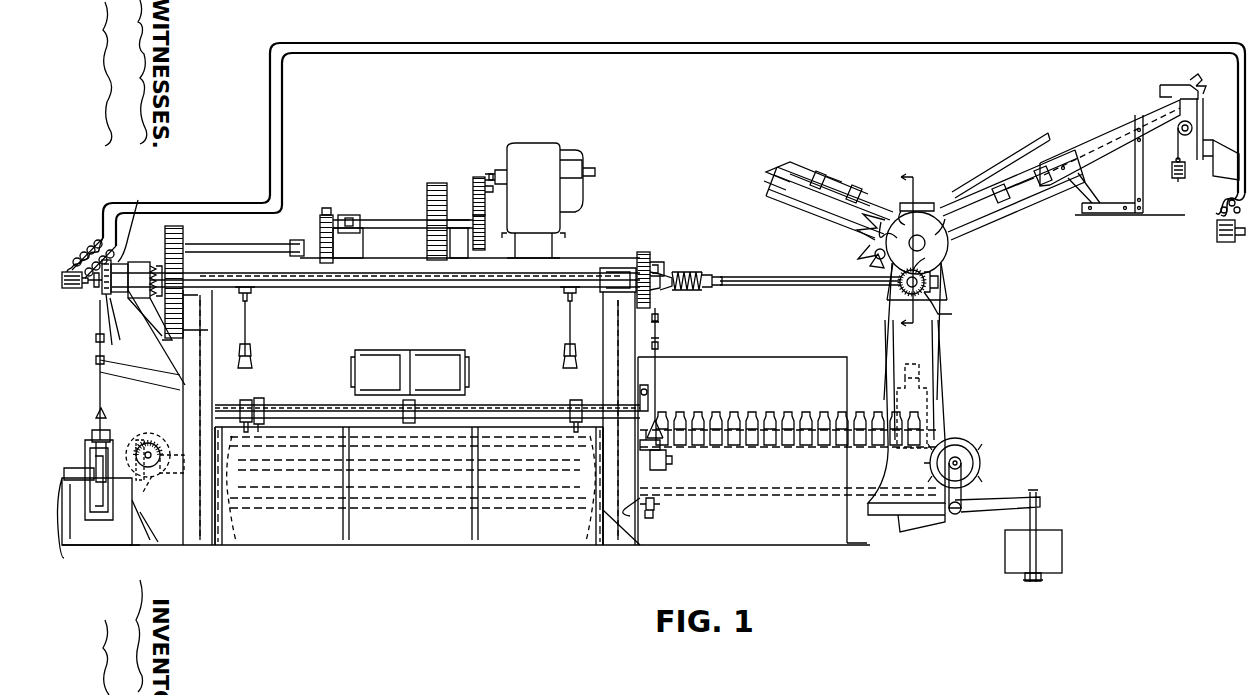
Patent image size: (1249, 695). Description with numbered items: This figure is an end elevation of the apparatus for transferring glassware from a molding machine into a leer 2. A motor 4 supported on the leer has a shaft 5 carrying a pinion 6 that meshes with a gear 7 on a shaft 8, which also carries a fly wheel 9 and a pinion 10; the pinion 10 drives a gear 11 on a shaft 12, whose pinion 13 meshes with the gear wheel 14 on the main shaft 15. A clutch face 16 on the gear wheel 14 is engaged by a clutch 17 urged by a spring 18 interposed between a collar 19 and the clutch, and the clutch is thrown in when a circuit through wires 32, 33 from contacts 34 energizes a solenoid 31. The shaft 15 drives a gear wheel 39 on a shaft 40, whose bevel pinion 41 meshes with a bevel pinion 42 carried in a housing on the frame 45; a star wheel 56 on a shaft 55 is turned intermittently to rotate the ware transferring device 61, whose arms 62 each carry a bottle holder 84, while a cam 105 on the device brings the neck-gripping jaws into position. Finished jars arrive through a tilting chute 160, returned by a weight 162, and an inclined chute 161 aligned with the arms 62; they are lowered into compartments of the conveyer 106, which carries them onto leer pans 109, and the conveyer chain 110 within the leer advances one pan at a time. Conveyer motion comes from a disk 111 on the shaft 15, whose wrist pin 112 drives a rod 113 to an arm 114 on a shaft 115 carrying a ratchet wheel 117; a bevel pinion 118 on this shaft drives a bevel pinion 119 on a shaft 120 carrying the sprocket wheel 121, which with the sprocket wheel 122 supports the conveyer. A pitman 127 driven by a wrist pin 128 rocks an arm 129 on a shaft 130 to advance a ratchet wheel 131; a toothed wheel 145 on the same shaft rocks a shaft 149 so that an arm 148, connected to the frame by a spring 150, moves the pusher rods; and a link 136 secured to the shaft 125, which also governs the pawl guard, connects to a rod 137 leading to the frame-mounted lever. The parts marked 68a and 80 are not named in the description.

The leer 2 is at (425, 358).
The motor 4 is at (542, 200).
The shaft 5 is at (473, 183).
The pinion 6 is at (481, 177).
The gear 7 is at (485, 238).
The shaft 8 is at (393, 222).
The fly wheel 9 is at (436, 186).
The pinion 10 is at (327, 208).
The gear 11 is at (340, 248).
The shaft 12 is at (272, 252).
The pinion 13 is at (183, 232).
The gear wheel 14 is at (185, 314).
The shaft 15 is at (396, 282).
The clutch face 16 is at (152, 318).
The clutch 17 is at (148, 256).
The spring 18 is at (115, 294).
The collar 19 is at (108, 322).
The solenoid 31 is at (70, 270).
The wire 32 is at (436, 52).
The wire 33 is at (440, 57).
The contacts 34 is at (1217, 232).
The gear wheel 39 is at (660, 300).
The shaft 40 is at (780, 273).
The bevel pinion 41 is at (938, 286).
The bevel pinion 42 is at (952, 314).
The frame 45 is at (926, 352).
The shaft 55 is at (868, 248).
The star wheel 56 is at (868, 262).
The ware transferring device 61 is at (898, 208).
The arms 62 is at (845, 190).
The hub 68a is at (948, 260).
The bottles 80 is at (796, 414).
The bottle holder 84 is at (776, 185).
The cam 105 is at (940, 200).
The conveyer 106 is at (968, 442).
The leer pans 109 is at (412, 525).
The conveyer chain 110 is at (245, 540).
The disk 111 is at (143, 221).
The wrist pin 112 is at (98, 290).
The rod 113 is at (101, 360).
The arm 114 is at (96, 446).
The shaft 115 is at (114, 545).
The ratchet wheel 117 is at (100, 489).
The bevel pinion 118 is at (144, 445).
The bevel pinion 119 is at (238, 462).
The shaft 120 is at (146, 540).
The sprocket wheel 121 is at (165, 480).
The sprocket wheel 122 is at (980, 461).
The shaft 125 is at (316, 400).
The pitman 127 is at (658, 372).
The wrist pin 128 is at (657, 266).
The arm 129 is at (660, 457).
The shaft 130 is at (672, 476).
The ratchet wheel 131 is at (660, 504).
The link 136 is at (270, 392).
The rod 137 is at (249, 338).
The toothed wheel 145 is at (655, 514).
The arm 148 is at (246, 400).
The shaft 149 is at (503, 408).
The spring 150 is at (648, 392).
The tilting chute 160 is at (1174, 86).
The chute 161 is at (1104, 140).
The weight 162 is at (1180, 180).